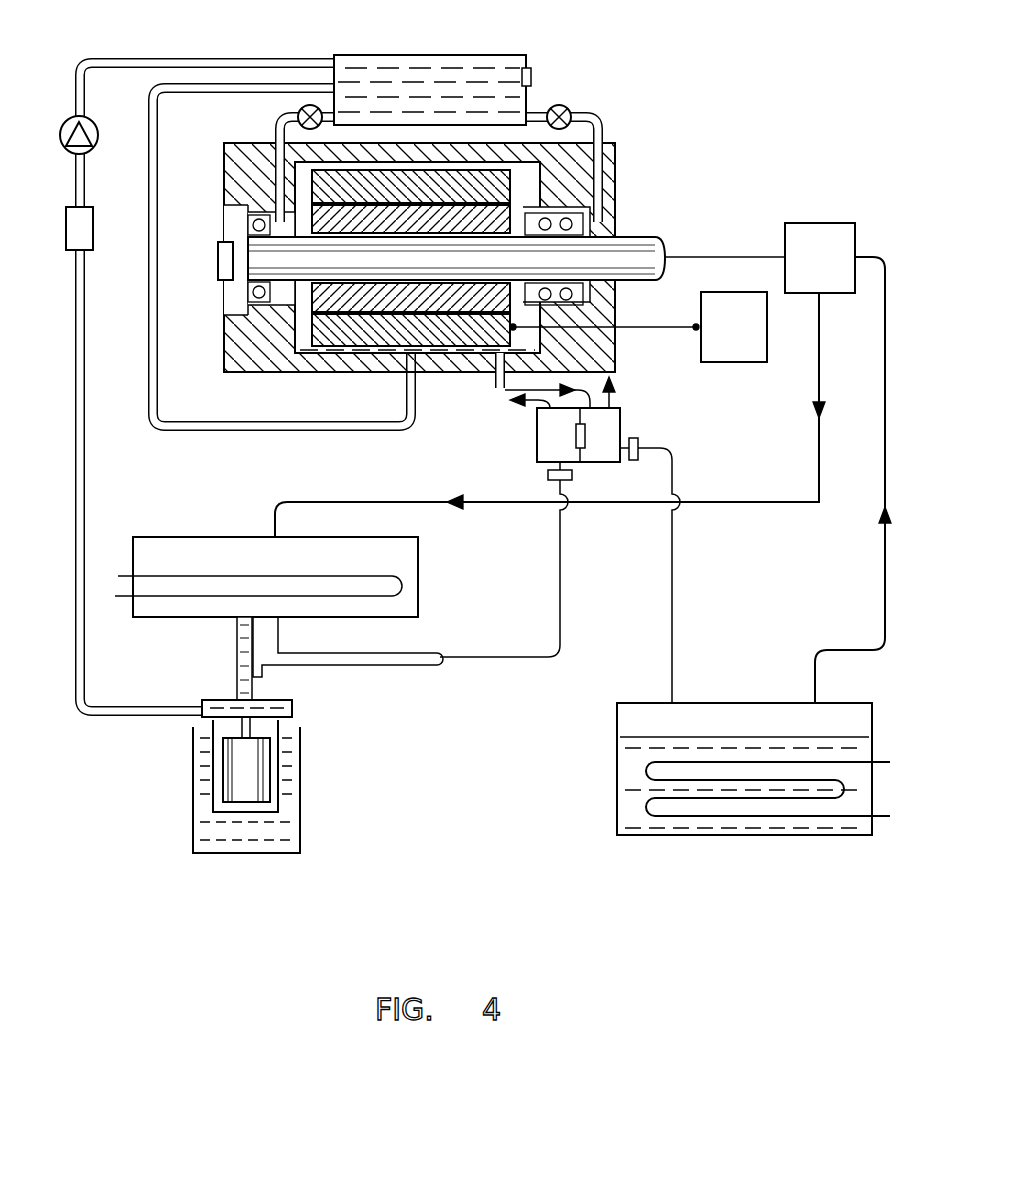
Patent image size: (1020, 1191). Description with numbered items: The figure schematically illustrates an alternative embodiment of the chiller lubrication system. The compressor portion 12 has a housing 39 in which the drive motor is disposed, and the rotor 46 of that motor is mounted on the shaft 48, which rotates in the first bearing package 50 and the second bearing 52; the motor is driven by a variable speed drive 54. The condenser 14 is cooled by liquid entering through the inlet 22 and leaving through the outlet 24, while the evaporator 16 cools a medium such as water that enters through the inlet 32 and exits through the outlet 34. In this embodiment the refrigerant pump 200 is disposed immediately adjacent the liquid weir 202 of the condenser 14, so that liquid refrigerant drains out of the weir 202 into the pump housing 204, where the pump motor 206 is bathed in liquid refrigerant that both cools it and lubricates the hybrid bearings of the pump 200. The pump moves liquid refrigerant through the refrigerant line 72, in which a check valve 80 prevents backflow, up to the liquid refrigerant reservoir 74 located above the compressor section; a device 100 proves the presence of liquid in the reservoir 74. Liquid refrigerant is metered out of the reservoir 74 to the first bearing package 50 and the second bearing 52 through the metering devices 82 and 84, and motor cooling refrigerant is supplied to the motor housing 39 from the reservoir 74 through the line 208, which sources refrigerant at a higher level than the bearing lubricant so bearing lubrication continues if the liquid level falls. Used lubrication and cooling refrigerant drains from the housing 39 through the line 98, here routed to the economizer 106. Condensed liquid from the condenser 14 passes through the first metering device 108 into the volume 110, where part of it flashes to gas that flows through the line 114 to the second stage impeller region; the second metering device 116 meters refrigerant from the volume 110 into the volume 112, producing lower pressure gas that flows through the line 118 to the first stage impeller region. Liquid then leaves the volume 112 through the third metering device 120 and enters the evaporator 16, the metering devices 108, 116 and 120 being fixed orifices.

The compressor portion 12 is at (820, 258).
The condenser 14 is at (207, 537).
The evaporator 16 is at (745, 835).
The inlet 22 is at (120, 576).
The outlet 24 is at (120, 598).
The inlet 32 is at (876, 762).
The outlet 34 is at (880, 818).
The housing 39 is at (228, 145).
The rotor 46 is at (352, 300).
The shaft 48 is at (662, 246).
The first bearing package 50 is at (585, 226).
The second bearing 52 is at (222, 222).
The variable speed drive 54 is at (638, 327).
The refrigerant line 72 is at (75, 350).
The liquid refrigerant reservoir 74 is at (484, 55).
The check valve 80 is at (64, 140).
The metering device 82 is at (572, 108).
The metering device 84 is at (297, 117).
The line 98 is at (497, 392).
The device 100 is at (531, 78).
The economizer 106 is at (622, 425).
The first metering device 108 is at (548, 477).
The volume 110 is at (560, 433).
The volume 112 is at (603, 433).
The line 114 is at (530, 405).
The second metering device 116 is at (576, 440).
The line 118 is at (612, 396).
The third metering device 120 is at (642, 570).
The refrigerant pump 200 is at (241, 776).
The liquid weir 202 is at (237, 655).
The pump housing 204 is at (300, 830).
The motor 206 is at (270, 758).
The line 208 is at (186, 432).